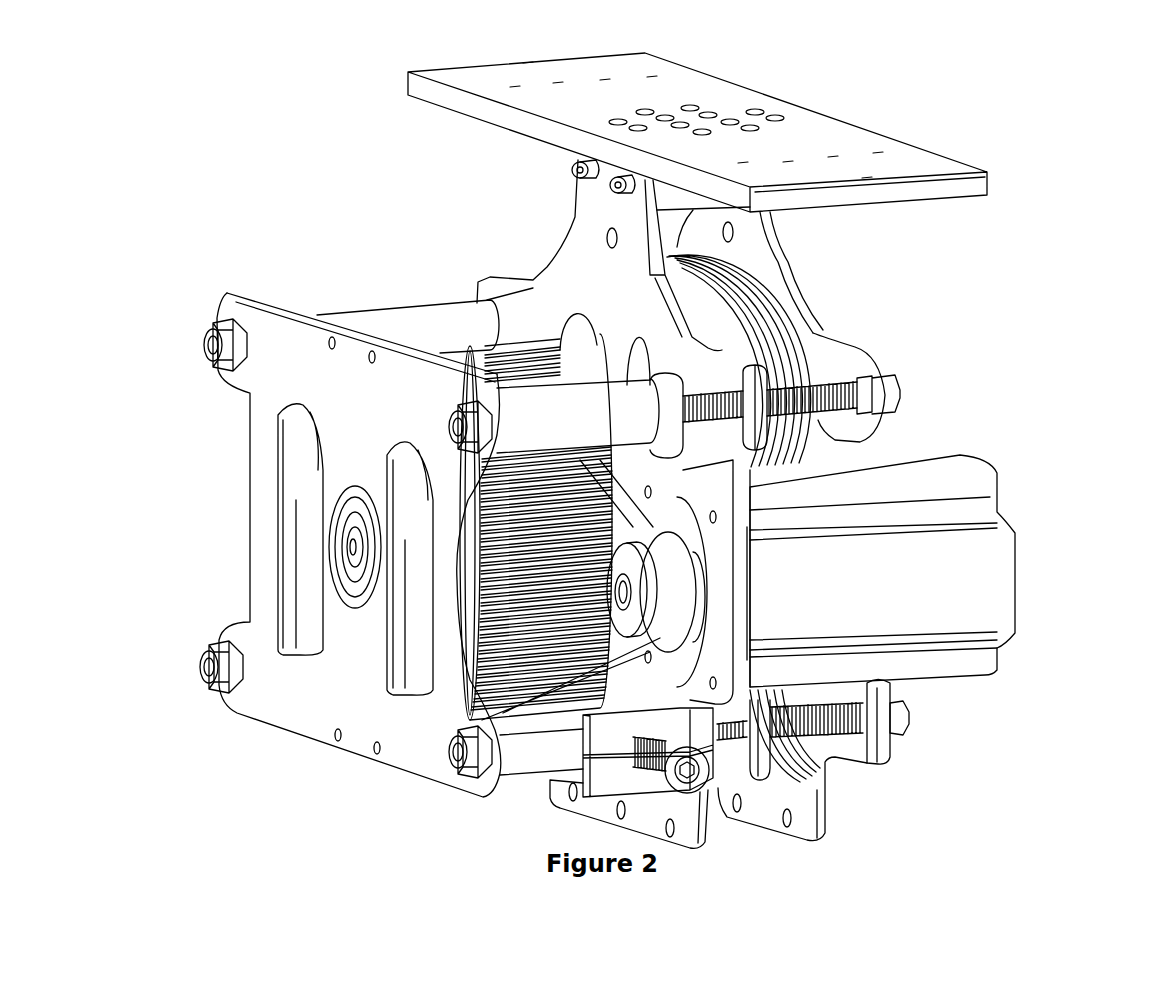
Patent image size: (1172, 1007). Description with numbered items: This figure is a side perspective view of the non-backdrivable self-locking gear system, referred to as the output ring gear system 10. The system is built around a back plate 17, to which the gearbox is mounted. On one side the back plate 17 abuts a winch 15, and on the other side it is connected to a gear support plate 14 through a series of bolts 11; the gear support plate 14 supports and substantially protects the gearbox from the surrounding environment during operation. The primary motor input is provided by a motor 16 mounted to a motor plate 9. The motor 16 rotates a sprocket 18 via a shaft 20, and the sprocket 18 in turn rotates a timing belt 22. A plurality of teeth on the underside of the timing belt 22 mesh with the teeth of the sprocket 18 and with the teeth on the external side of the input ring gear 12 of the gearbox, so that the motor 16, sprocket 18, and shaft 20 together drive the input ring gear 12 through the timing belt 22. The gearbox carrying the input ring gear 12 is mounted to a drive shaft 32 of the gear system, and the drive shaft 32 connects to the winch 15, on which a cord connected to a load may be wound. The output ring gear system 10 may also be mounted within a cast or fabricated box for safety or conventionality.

The motor plate 9 is at (740, 667).
The output ring gear system 10 is at (938, 113).
The bolts 11 is at (203, 340).
The input ring gear 12 is at (525, 643).
The gear support plate 14 is at (273, 333).
The winch 15 is at (757, 308).
The motor 16 is at (987, 583).
The back plate 17 is at (563, 278).
The sprocket 18 is at (627, 628).
The shaft 20 is at (623, 593).
The timing belt 22 is at (627, 517).
The drive shaft 32 is at (340, 545).